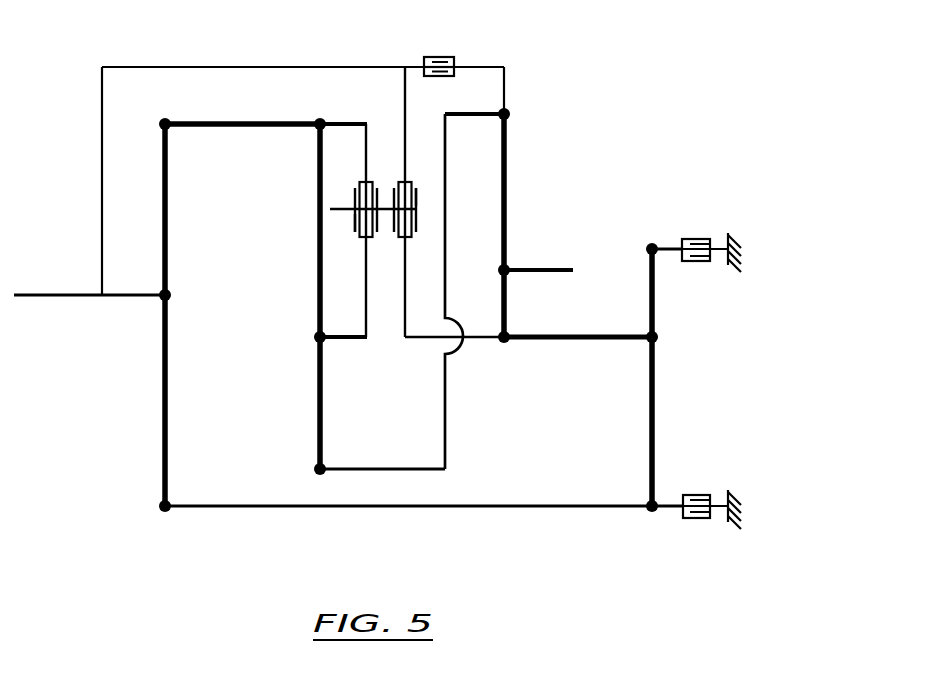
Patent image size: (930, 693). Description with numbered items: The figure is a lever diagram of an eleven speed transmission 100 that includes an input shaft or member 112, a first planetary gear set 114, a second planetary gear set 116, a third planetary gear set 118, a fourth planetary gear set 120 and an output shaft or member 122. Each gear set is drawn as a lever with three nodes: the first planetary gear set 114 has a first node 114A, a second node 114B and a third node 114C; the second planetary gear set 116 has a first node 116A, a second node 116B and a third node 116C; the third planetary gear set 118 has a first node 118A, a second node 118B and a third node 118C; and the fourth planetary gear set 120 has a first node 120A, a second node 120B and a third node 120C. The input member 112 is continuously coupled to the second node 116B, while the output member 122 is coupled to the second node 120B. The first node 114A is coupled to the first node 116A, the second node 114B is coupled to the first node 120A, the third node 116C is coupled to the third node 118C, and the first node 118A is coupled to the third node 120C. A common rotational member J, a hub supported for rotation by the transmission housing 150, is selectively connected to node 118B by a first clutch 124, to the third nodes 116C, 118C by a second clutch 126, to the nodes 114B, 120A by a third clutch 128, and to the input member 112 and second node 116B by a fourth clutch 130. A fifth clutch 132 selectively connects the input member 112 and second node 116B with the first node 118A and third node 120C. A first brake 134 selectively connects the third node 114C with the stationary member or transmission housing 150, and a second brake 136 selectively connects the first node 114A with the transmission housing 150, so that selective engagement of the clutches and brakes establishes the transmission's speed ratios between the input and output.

The eleven speed transmission 100 is at (686, 66).
The input shaft or member 112 is at (38, 297).
The first planetary gear set 114 is at (661, 548).
The first node of the first planetary gear set 114A is at (652, 511).
The second node of the first planetary gear set 114B is at (655, 335).
The third node of the first planetary gear set 114C is at (652, 247).
The second planetary gear set 116 is at (174, 548).
The first node of the second planetary gear set 116A is at (165, 509).
The second node of the second planetary gear set 116B is at (167, 293).
The third node of the second planetary gear set 116C is at (167, 126).
The third planetary gear set 118 is at (335, 494).
The first node of the third planetary gear set 118A is at (319, 471).
The node of the third planetary gear set 118B is at (318, 338).
The third node of the third planetary gear set 118C is at (318, 120).
The fourth planetary gear set 120 is at (512, 376).
The first node of the fourth planetary gear set 120A is at (503, 341).
The second node of the fourth planetary gear set 120B is at (506, 267).
The third node of the fourth planetary gear set 120C is at (506, 112).
The output shaft or member 122 is at (563, 272).
The first clutch 124 is at (355, 226).
The second clutch 126 is at (355, 203).
The third clutch 128 is at (417, 221).
The fourth clutch 130 is at (417, 197).
The fifth clutch 132 is at (436, 56).
The first brake 134 is at (705, 238).
The second brake 136 is at (697, 521).
The stationary member or transmission housing 150 is at (735, 236).
The common rotational member J is at (348, 210).